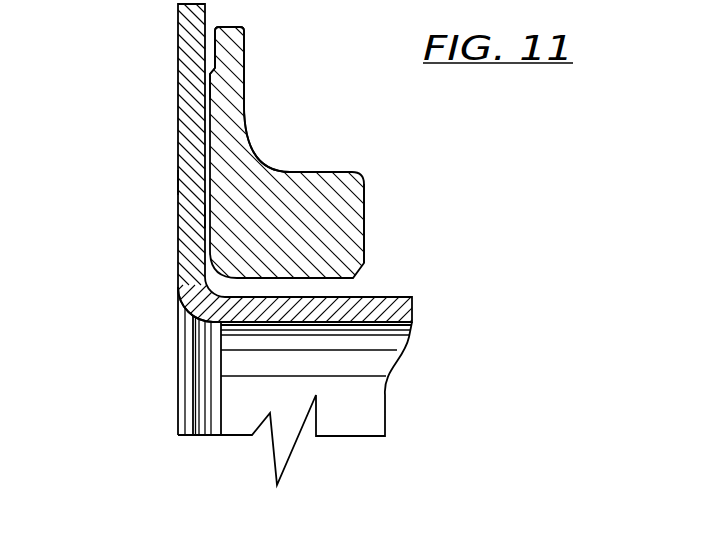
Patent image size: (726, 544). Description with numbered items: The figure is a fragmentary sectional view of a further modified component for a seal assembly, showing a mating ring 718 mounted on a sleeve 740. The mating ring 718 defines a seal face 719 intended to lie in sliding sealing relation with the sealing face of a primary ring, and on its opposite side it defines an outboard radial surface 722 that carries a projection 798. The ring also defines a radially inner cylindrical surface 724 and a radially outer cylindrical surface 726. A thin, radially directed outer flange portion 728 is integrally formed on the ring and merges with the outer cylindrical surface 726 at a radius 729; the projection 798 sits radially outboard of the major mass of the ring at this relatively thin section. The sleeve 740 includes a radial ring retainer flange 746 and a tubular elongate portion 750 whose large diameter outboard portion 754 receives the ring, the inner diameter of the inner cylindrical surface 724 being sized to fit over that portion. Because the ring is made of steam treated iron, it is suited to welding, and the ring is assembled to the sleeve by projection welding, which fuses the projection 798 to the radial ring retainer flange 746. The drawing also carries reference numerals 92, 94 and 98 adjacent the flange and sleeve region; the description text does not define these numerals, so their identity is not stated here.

The inner wall layer 92 is at (188, 180).
The flange surface 94 is at (283, 298).
The wall layer 98 is at (200, 212).
The mating ring 718 is at (342, 157).
The seal face 719 is at (363, 212).
The outboard radial surface 722 is at (180, 300).
The radially inner cylindrical surface 724 is at (323, 283).
The radially outer cylindrical surface 726 is at (320, 172).
The outer flange portion 728 is at (228, 53).
The radius 729 is at (260, 152).
The sleeve 740 is at (397, 360).
The radial ring retainer flange 746 is at (178, 30).
The tubular elongate portion 750 is at (477, 307).
The large diameter outboard portion 754 is at (357, 324).
The projection 798 is at (210, 89).